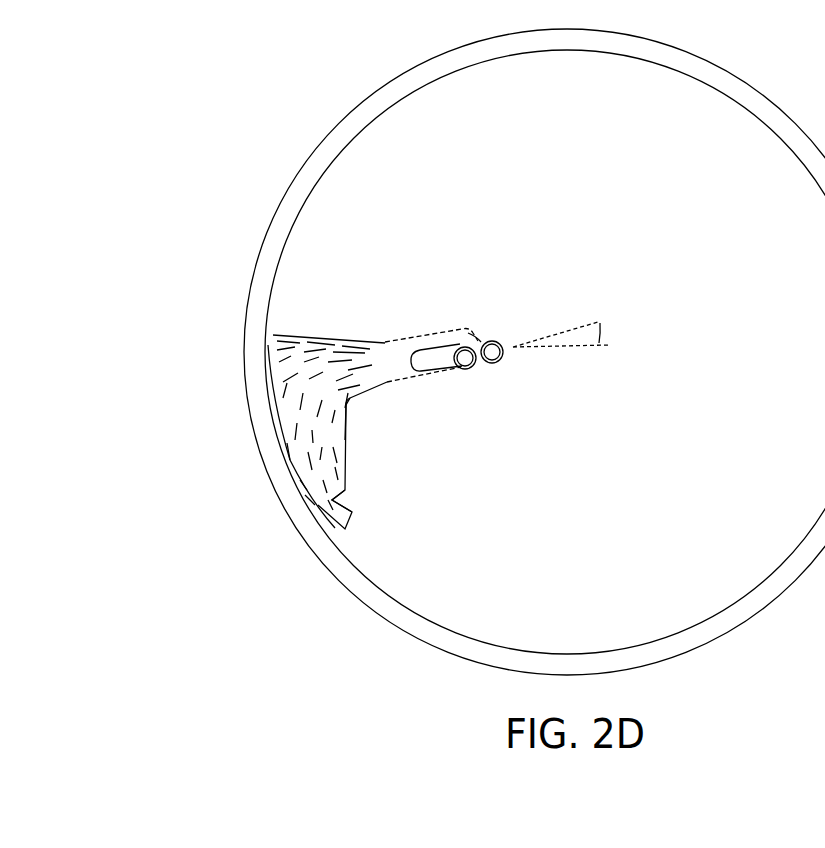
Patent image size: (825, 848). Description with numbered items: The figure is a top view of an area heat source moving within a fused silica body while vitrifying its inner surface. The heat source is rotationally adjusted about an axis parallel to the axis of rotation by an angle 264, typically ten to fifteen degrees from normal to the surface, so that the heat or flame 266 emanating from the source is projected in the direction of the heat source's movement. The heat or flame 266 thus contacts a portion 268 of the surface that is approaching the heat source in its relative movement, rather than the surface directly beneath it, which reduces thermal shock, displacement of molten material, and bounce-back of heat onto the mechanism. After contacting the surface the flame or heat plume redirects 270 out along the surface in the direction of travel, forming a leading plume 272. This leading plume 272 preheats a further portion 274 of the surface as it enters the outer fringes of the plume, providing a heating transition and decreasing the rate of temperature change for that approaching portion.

The angle 264 is at (598, 333).
The heat or flame 266 is at (382, 350).
The portion of the surface 268 is at (267, 362).
The redirect 270 is at (346, 400).
The leading plume 272 is at (350, 502).
The portion of the surface 274 is at (330, 538).